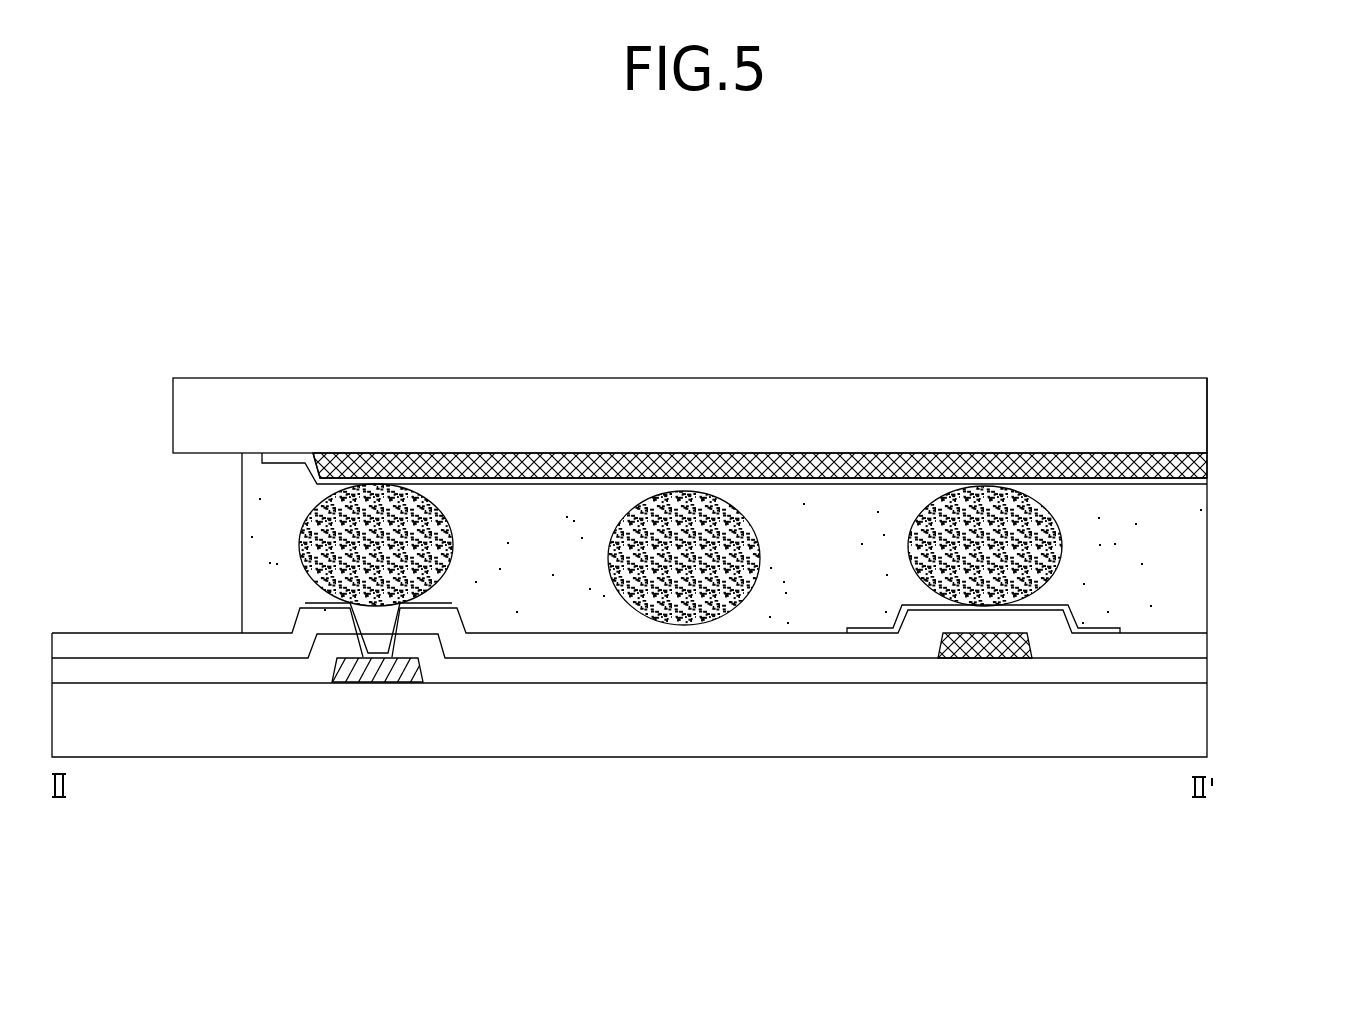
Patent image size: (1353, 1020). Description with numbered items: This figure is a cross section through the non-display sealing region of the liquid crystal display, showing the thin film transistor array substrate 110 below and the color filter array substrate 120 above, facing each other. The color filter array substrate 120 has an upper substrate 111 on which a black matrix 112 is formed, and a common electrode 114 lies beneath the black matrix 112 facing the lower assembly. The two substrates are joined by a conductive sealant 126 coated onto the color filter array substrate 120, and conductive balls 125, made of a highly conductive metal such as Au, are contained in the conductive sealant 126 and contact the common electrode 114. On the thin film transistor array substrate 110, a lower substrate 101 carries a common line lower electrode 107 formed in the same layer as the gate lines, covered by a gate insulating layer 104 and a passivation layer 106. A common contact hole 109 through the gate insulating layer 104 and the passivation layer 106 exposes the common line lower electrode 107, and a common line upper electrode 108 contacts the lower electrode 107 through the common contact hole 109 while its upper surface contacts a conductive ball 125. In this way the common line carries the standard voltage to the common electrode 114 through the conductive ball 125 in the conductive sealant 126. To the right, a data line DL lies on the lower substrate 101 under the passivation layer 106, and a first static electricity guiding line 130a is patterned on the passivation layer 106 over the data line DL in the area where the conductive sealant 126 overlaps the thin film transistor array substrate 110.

The color filter array substrate 120 is at (757, 409).
The upper substrate 111 is at (1207, 414).
The black matrix 112 is at (1207, 456).
The common electrode 114 is at (1207, 481).
The conductive sealant 126 is at (1207, 545).
The conductive ball 125 is at (453, 542).
The thin film transistor array substrate 110 is at (697, 609).
The lower substrate 101 is at (1207, 715).
The gate insulating layer 104 is at (1207, 672).
The passivation layer 106 is at (1207, 640).
The common line upper electrode 108 is at (437, 604).
The common line lower electrode 107 is at (355, 675).
The common contact hole 109 is at (378, 642).
The data line DL is at (973, 658).
The first static electricity guiding line 130a is at (1090, 633).